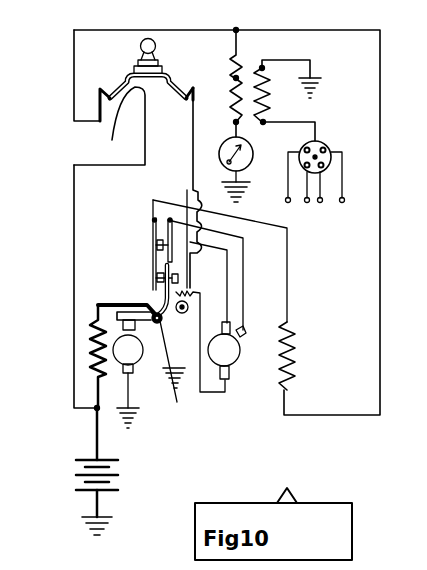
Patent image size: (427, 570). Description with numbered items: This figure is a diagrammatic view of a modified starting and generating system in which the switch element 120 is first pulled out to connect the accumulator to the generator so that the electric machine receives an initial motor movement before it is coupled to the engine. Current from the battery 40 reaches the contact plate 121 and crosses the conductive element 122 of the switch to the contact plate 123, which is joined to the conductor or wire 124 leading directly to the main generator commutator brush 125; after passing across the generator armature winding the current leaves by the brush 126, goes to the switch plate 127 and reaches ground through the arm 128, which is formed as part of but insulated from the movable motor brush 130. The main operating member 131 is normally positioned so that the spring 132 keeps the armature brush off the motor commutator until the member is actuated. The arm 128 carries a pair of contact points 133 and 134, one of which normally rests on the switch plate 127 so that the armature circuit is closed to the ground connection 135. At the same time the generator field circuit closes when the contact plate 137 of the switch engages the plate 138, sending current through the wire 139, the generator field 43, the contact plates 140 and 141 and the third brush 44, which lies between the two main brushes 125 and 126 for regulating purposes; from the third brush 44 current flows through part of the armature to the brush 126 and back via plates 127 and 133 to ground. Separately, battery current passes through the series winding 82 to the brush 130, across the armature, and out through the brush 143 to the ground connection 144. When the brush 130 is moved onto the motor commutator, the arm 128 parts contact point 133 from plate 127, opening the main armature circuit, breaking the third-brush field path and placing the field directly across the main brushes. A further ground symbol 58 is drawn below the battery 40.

The wire 139 is at (198, 30).
The contact plate 137 is at (128, 74).
The plate 138 is at (110, 90).
The switch element 120 is at (152, 64).
The conductive element 122 is at (170, 78).
The contact plate 123 is at (194, 92).
The contact plate 121 is at (109, 126).
The conductor or wire 124 is at (188, 132).
The contact plate 141 is at (170, 218).
The contact plate 140 is at (154, 217).
The contact point 133 is at (150, 244).
The contact point 134 is at (158, 270).
The arm 128 is at (166, 298).
The movable motor brush 130 is at (100, 306).
The series winding 82 is at (102, 342).
The switch plate 127 is at (173, 262).
The spring 132 is at (196, 294).
The brush 126 is at (229, 325).
The main operating member 131 is at (182, 313).
The generator field 43 is at (292, 342).
The third brush 44 is at (243, 336).
The brush 143 is at (132, 370).
The ground connection 135 is at (186, 375).
The main generator commutator brush 125 is at (228, 374).
The ground connection 144 is at (130, 430).
The battery 40 is at (100, 481).
The ground 58 is at (97, 530).